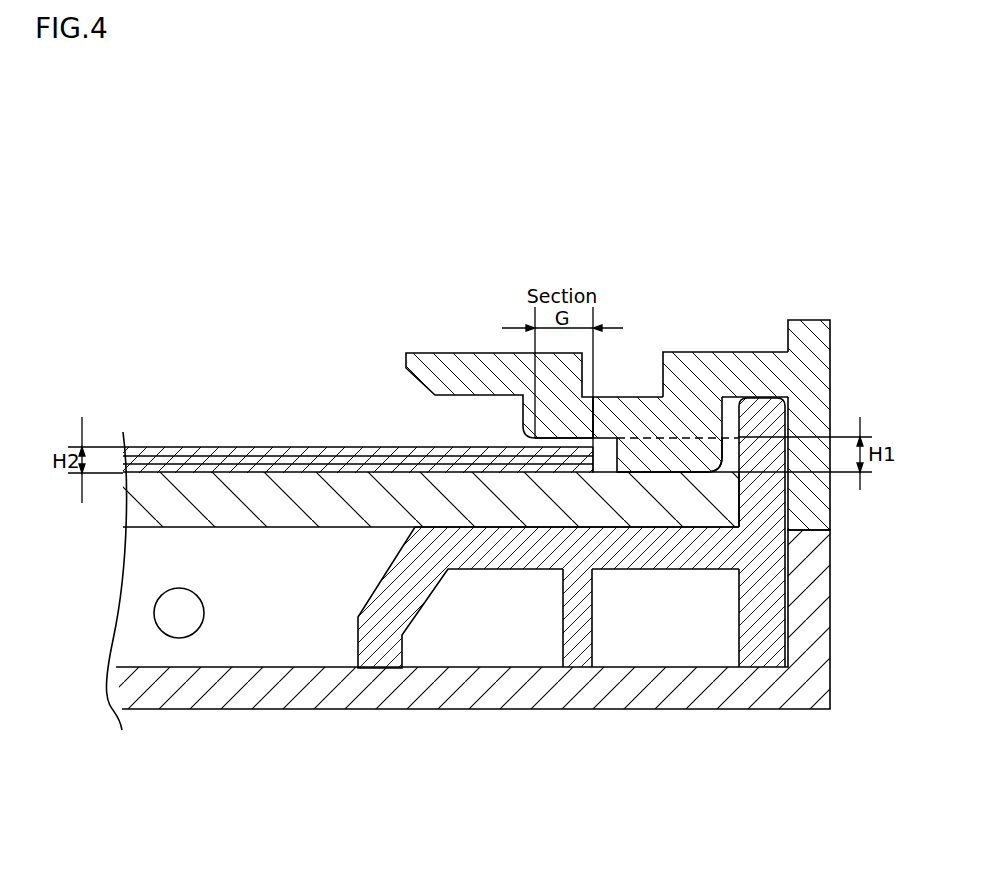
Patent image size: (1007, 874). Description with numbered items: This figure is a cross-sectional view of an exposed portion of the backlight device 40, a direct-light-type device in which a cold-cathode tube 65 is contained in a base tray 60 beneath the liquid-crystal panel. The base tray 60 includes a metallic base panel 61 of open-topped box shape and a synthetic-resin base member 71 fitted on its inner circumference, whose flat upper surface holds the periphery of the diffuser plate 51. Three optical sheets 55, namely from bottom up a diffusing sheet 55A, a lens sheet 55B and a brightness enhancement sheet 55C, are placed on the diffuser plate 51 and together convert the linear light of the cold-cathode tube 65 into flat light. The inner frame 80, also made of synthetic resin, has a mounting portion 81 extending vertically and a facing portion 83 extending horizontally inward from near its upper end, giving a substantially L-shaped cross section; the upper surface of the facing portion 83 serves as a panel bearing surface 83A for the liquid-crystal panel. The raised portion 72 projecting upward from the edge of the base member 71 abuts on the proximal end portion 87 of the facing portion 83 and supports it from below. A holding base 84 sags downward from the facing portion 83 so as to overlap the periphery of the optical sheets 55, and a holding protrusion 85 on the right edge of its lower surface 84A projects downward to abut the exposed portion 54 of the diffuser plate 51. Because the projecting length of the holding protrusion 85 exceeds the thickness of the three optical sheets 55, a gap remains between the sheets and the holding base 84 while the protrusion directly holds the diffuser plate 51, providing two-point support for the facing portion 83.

The backlight device 40 is at (255, 258).
The diffuser plate 51 is at (298, 507).
The exposed portion 54 is at (610, 462).
The optical sheets 55 is at (343, 378).
The diffusing sheet 55A is at (146, 467).
The lens sheet 55B is at (175, 460).
The brightness enhancement sheet 55C is at (208, 452).
The base tray 60 is at (473, 629).
The base panel 61 is at (328, 710).
The cold-cathode tube 65 is at (179, 623).
The base member 71 is at (523, 553).
The raised portion 72 is at (762, 502).
The inner frame 80 is at (598, 385).
The mounting portion 81 is at (817, 397).
The facing portion 83 is at (598, 406).
The panel bearing surface 83A is at (467, 350).
The holding base 84 is at (598, 446).
The lower surface 84A is at (555, 440).
The holding protrusion 85 is at (700, 457).
The proximal end portion 87 is at (765, 378).